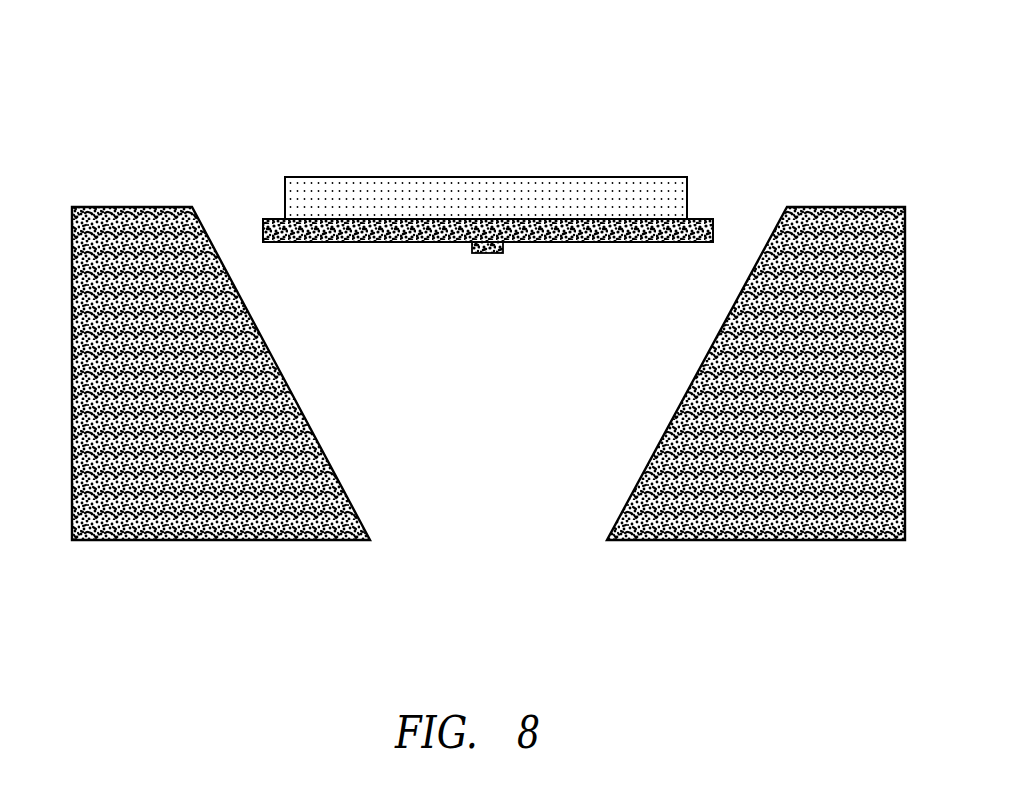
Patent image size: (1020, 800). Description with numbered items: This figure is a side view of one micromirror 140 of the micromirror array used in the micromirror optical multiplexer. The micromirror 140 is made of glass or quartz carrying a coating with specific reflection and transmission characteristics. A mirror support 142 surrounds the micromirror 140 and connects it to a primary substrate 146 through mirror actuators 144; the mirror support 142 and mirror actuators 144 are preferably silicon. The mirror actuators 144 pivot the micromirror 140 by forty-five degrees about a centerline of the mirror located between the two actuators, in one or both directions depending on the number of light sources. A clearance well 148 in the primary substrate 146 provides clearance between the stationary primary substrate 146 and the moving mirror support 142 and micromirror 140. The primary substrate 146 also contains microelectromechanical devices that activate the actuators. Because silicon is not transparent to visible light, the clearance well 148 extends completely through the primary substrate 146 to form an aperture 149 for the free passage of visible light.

The micromirror 140 is at (291, 172).
The mirror support 142 is at (497, 214).
The mirror actuators 144 is at (480, 258).
The primary substrate 146 is at (715, 518).
The clearance well 148 is at (690, 298).
The aperture 149 is at (522, 540).